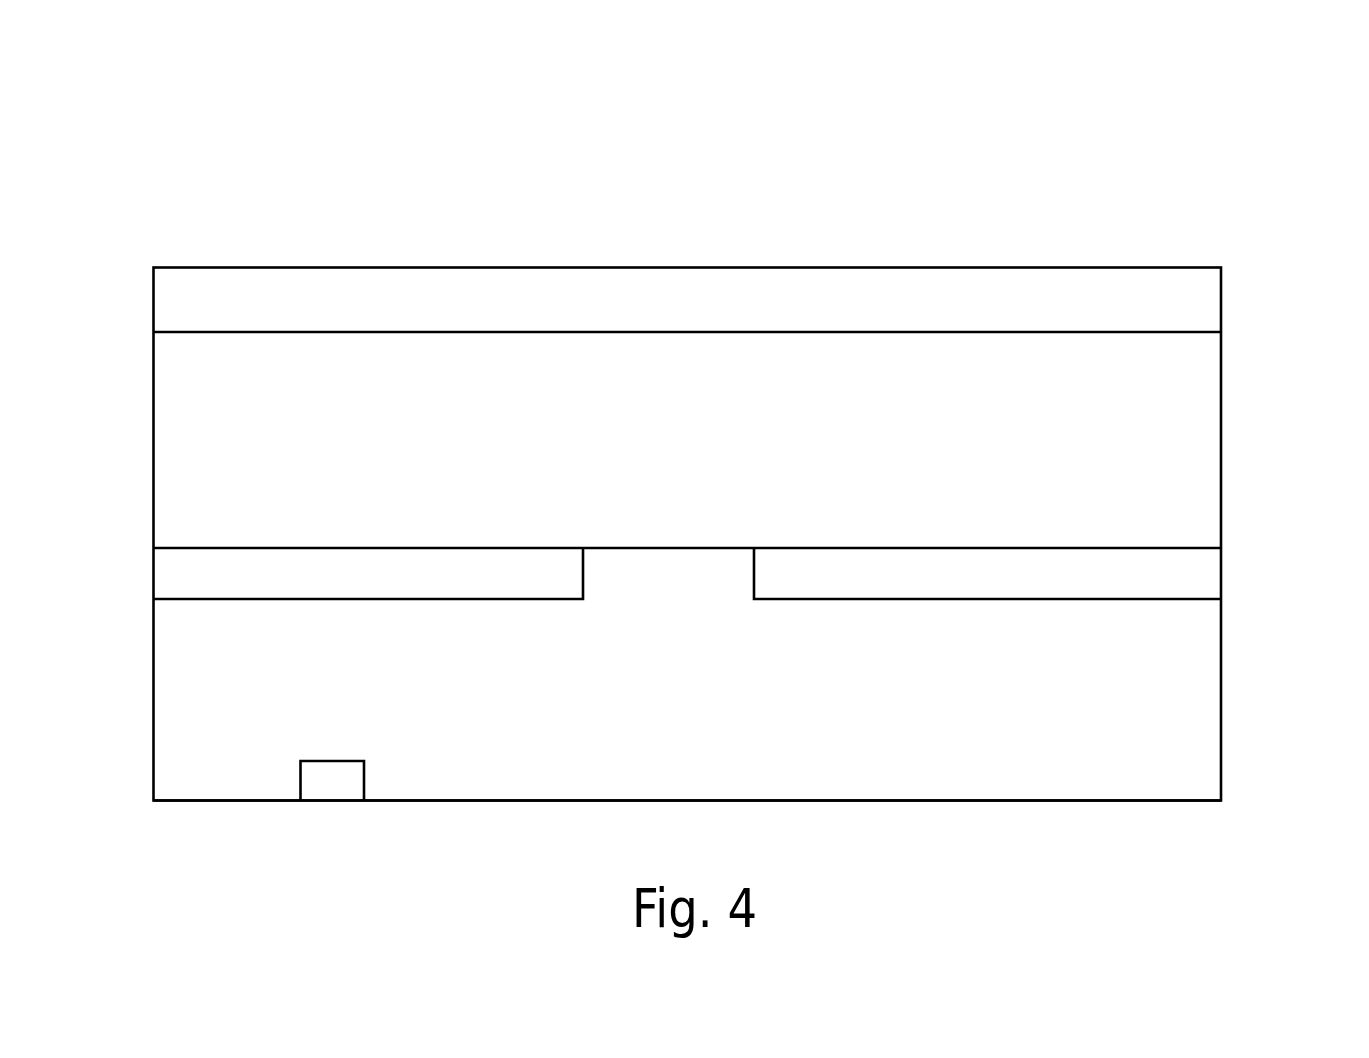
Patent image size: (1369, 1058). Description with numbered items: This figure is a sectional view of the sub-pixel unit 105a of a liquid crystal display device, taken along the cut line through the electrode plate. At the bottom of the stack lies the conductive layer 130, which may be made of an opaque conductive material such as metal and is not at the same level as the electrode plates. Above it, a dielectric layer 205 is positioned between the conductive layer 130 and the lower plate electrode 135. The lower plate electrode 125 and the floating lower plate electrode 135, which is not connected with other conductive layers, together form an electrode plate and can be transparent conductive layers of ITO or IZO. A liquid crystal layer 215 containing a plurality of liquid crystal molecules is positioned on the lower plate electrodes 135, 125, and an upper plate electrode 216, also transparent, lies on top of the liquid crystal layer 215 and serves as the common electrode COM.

The sub-pixel unit 105a is at (1162, 158).
The upper plate electrode 216 is at (1221, 295).
The liquid crystal layer 215 is at (1221, 455).
The lower plate electrode 125 is at (1221, 575).
The floating lower plate electrode 135 is at (153, 576).
The dielectric layer 205 is at (1221, 712).
The conductive layer 130 is at (343, 787).